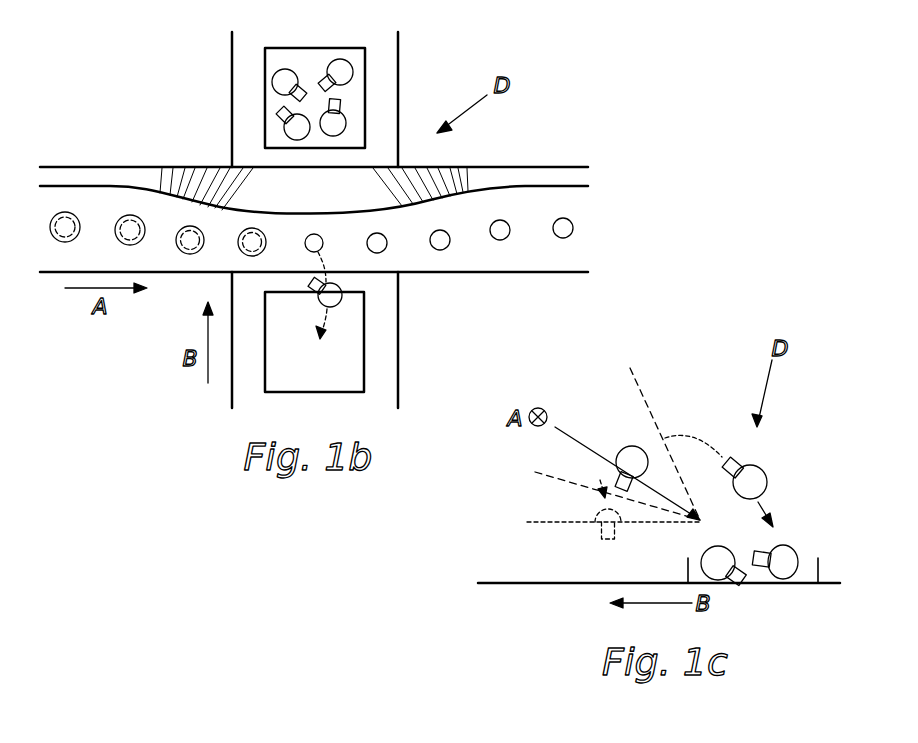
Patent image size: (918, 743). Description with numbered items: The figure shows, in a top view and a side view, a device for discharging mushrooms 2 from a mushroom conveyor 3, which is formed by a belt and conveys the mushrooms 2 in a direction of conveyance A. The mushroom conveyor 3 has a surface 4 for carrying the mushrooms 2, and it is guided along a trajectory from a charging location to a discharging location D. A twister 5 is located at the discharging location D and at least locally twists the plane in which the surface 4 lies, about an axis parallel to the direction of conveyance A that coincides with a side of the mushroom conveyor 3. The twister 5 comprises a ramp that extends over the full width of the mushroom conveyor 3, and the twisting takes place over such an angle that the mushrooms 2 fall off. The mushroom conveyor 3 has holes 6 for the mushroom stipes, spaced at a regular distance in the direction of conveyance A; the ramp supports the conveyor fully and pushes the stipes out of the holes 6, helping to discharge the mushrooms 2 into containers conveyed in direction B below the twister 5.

In FIG. 1B, the mushrooms 2 is at (68, 212).
In FIG. 1C, the mushrooms 2 is at (626, 446).
In FIG. 1B, the mushroom conveyor 3 is at (120, 177).
In FIG. 1C, the mushroom conveyor 3 is at (588, 470).
In FIG. 1B, the surface 4 is at (413, 245).
In FIG. 1C, the surface 4 is at (632, 368).
In FIG. 1B, the twister 5 is at (323, 198).
In FIG. 1C, the twister 5 is at (551, 460).
In FIG. 1B, the holes 6 is at (500, 240).
In FIG. 1C, the holes 6 is at (612, 480).